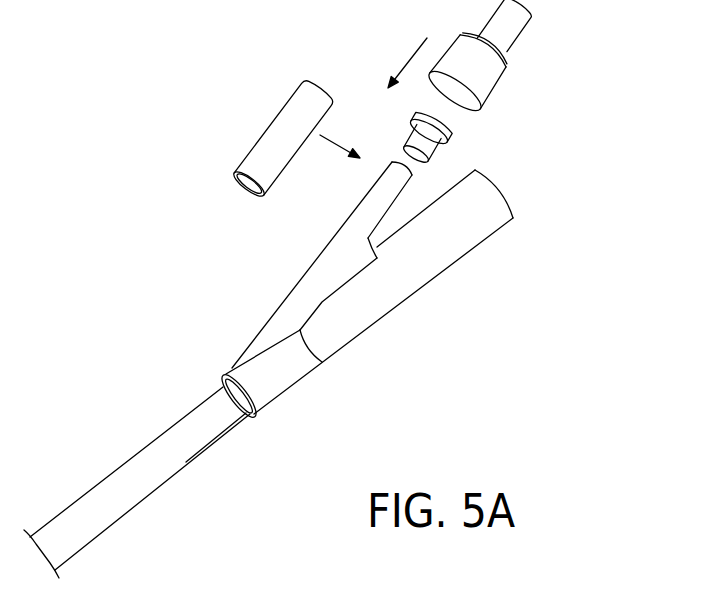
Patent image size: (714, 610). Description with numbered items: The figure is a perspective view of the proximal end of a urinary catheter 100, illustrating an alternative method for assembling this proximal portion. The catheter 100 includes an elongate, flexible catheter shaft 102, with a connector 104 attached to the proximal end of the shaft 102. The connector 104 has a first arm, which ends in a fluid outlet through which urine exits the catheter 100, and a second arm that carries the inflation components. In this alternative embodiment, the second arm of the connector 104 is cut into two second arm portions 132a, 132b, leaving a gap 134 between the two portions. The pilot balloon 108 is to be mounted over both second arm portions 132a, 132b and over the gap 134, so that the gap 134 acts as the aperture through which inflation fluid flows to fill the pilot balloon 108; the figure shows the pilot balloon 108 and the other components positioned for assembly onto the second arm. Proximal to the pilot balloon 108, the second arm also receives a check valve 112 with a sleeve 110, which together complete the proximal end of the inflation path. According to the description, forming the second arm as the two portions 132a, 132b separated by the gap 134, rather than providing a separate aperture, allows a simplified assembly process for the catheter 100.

The urinary catheter 100 is at (168, 228).
The catheter shaft 102 is at (177, 470).
The connector 104 is at (345, 346).
The pilot balloon 108 is at (258, 136).
The sleeve 110 is at (502, 83).
The check valve 112 is at (528, 27).
The second arm portion 132a is at (292, 292).
The second arm portion 132b is at (407, 127).
The gap 134 is at (418, 170).